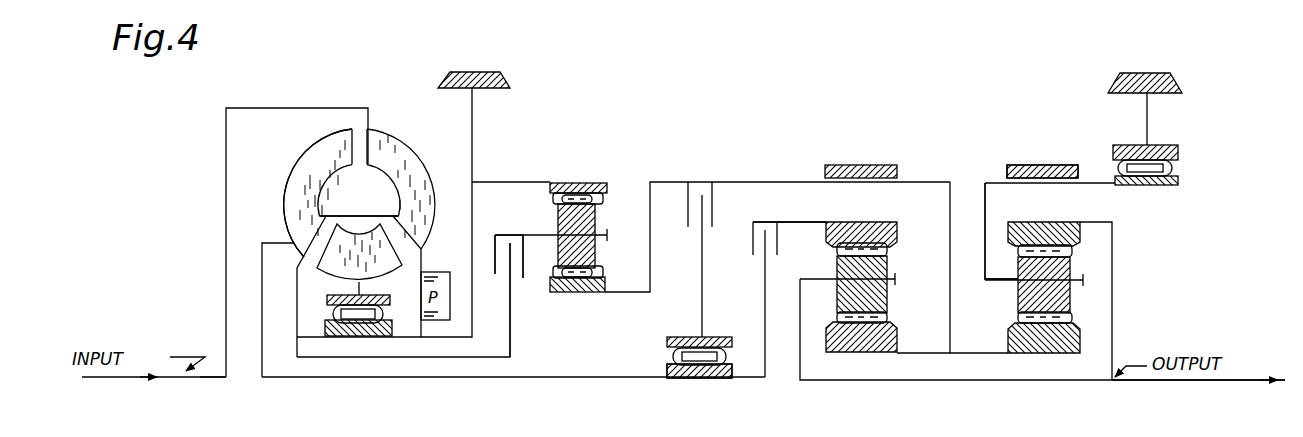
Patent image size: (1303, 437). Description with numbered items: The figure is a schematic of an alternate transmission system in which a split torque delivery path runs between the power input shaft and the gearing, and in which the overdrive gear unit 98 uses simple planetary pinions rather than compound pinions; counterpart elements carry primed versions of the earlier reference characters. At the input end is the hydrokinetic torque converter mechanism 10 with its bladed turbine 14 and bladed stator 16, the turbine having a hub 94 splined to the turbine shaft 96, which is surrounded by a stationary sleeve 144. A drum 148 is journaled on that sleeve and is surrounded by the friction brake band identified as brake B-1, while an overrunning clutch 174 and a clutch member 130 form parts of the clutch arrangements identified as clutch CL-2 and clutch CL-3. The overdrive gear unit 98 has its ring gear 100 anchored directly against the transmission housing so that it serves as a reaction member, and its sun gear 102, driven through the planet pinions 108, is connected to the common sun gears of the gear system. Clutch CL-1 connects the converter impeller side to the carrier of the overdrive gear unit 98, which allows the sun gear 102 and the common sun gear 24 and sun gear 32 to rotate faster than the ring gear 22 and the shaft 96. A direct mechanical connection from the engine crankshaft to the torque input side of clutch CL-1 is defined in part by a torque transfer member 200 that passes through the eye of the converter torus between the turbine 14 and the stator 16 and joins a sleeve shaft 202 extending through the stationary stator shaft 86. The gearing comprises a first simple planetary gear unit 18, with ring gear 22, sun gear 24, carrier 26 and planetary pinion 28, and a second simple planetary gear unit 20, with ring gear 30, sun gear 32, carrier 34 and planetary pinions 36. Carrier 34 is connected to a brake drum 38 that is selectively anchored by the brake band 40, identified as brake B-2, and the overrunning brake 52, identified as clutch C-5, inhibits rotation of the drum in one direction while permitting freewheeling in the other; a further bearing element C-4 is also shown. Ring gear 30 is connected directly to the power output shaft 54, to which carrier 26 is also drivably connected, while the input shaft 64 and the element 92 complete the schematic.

The hydrokinetic torque converter mechanism 10 is at (419, 147).
The bladed turbine 14 is at (307, 162).
The bladed stator 16 is at (340, 242).
The first simple planetary gear unit 18 is at (875, 217).
The second simple planetary gear unit 20 is at (1064, 219).
The ring gear 22 is at (897, 236).
The sun gear 24 is at (892, 334).
The carrier 26 is at (893, 291).
The planetary pinion 28 is at (887, 258).
The ring gear 30 is at (1070, 237).
The sun gear 32 is at (1078, 337).
The carrier 34 is at (985, 279).
The planetary pinions 36 is at (1065, 300).
The brake drum 38 is at (988, 182).
The brake band 40 is at (1068, 165).
The overrunning brake 52 is at (1161, 168).
The power output shaft 54 is at (1174, 383).
The input shaft 64 is at (194, 380).
The stationary stator shaft 86 is at (422, 340).
The bearing 92 is at (364, 318).
The hub 94 is at (262, 302).
The turbine shaft 96 is at (463, 381).
The overdrive gear unit 98 is at (527, 181).
The ring gear 100 is at (594, 181).
The sun gear 102 is at (559, 293).
The planet pinions 108 is at (589, 293).
The clutch member 130 is at (511, 347).
The stationary sleeve 144 is at (470, 90).
The drum 148 is at (801, 183).
The overrunning clutch 174 is at (720, 336).
The torque transfer member 200 is at (366, 213).
The sleeve shaft 202 is at (338, 358).
The clutch CL-1 is at (518, 234).
The clutch 2 CL-2 is at (760, 123).
The clutch CL-3 is at (772, 219).
The brake B-1 is at (877, 163).
The brake B-2 is at (1080, 128).
The bearing C-4 is at (701, 382).
The clutch C-5 is at (1158, 143).